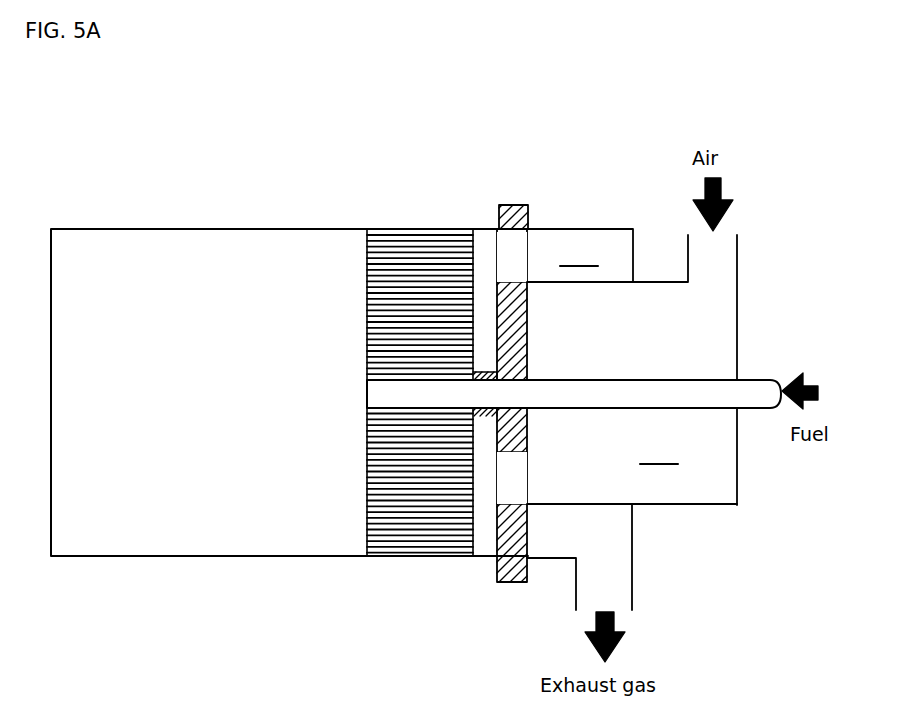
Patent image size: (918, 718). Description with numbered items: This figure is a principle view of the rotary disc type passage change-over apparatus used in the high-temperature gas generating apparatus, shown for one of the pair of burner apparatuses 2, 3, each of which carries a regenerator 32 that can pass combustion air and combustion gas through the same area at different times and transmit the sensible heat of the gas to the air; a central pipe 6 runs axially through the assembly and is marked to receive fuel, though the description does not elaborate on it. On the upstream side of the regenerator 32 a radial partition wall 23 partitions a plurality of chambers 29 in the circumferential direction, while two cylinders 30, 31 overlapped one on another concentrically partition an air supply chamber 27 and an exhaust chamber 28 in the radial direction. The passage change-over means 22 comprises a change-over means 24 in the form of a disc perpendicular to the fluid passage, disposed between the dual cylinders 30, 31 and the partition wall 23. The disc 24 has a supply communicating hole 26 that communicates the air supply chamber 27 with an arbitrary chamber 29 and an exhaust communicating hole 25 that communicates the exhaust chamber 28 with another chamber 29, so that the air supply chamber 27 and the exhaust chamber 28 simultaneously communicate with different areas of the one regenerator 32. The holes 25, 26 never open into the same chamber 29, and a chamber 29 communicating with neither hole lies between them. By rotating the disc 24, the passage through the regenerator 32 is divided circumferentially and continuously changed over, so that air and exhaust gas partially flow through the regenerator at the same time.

The burner apparatus 2 is at (289, 353).
The burner apparatus 3 is at (321, 213).
The fuel supply pipe 6 is at (757, 388).
The passage change-over means 22 is at (538, 332).
The radial partition wall 23 is at (488, 370).
The change-over means 24 is at (514, 205).
The exhaust communicating hole 25 is at (516, 255).
The supply communicating hole 26 is at (513, 483).
The air supply chamber 27 is at (632, 456).
The exhaust chamber 28 is at (607, 255).
The chamber 29 is at (483, 533).
The cylinder 30 is at (609, 507).
The cylinder 31 is at (612, 229).
The regenerator 32 is at (395, 533).